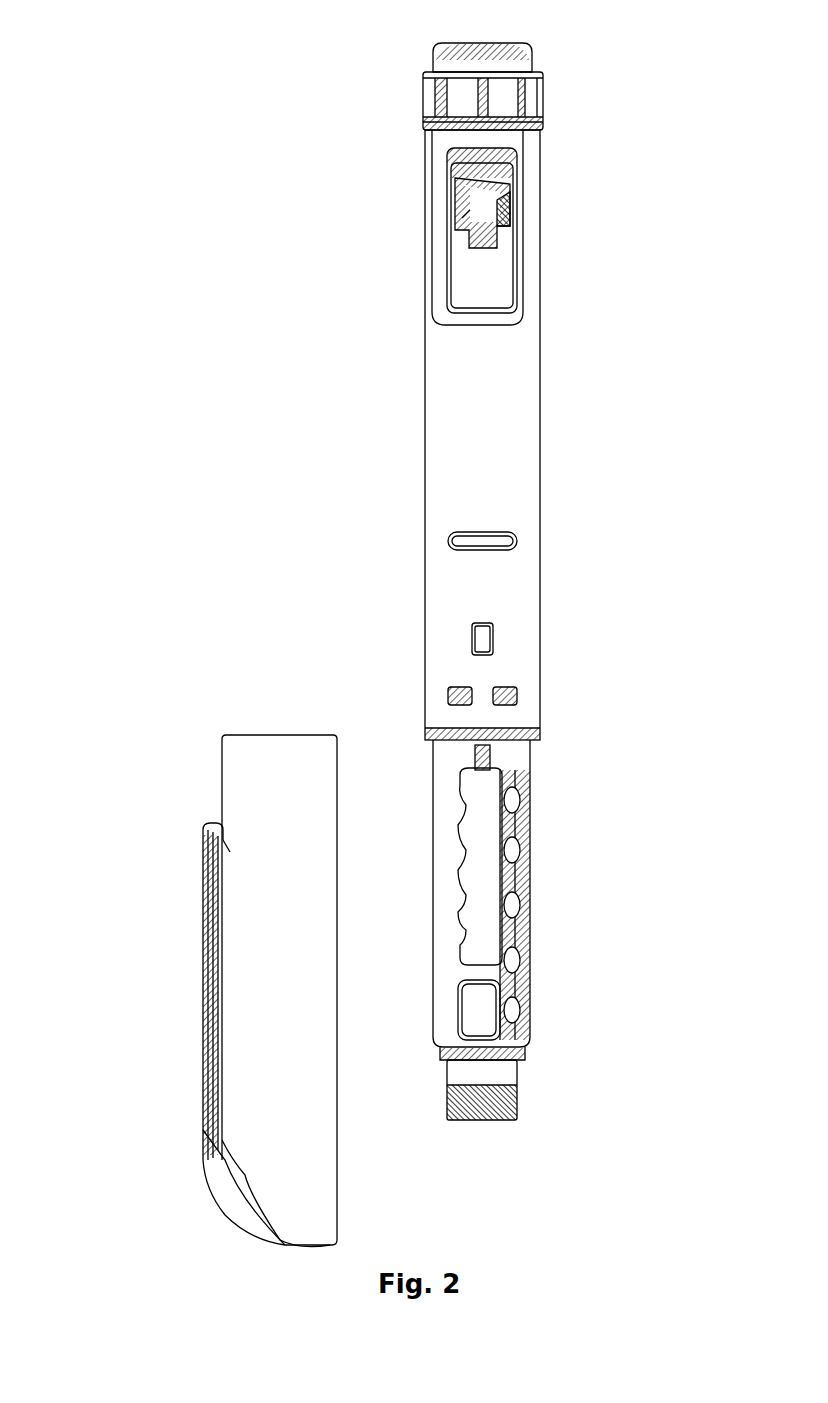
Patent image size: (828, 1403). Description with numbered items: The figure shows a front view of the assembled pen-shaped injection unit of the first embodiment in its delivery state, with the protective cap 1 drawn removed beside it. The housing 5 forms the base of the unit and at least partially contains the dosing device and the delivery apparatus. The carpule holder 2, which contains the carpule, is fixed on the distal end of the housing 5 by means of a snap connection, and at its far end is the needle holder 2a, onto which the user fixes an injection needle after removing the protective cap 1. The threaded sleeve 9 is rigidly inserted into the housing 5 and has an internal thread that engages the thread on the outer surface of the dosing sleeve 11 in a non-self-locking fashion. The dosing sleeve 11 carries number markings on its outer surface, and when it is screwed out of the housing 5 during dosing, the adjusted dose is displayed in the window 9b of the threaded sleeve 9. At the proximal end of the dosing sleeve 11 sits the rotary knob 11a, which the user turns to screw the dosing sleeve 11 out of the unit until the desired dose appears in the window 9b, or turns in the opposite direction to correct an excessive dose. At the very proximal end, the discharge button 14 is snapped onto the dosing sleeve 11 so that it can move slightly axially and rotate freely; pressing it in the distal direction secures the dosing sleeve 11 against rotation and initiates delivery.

The protective cap 1 is at (184, 992).
The carpule holder 2 is at (549, 863).
The needle holder 2a is at (515, 1106).
The housing 5 is at (405, 437).
The threaded sleeve 9 is at (485, 283).
The window 9b is at (492, 218).
The dosing sleeve 11 is at (473, 203).
The rotary knob 11a is at (549, 95).
The discharge button 14 is at (507, 35).